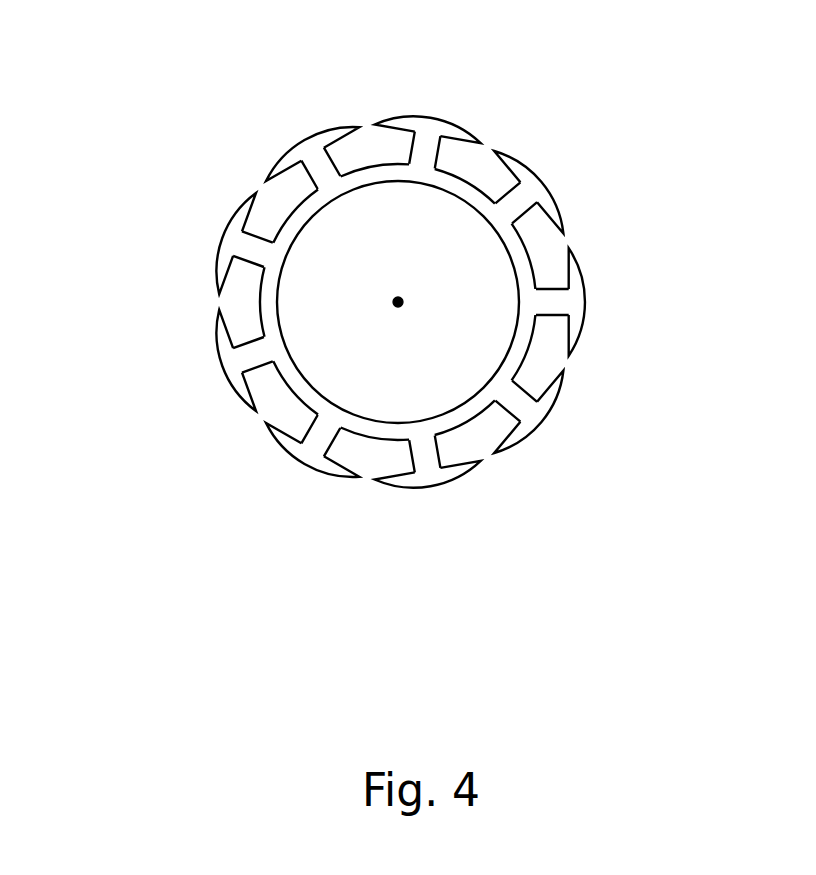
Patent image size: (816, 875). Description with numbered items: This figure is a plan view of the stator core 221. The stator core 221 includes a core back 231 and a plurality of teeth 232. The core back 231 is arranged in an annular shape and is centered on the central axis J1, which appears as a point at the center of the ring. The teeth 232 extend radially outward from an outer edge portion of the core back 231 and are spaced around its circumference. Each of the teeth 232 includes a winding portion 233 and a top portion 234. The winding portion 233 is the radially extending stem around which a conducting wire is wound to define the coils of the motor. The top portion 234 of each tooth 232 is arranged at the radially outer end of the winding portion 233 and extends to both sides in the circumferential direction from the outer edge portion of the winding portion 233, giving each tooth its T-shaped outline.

The stator core 221 is at (387, 302).
The core back 231 is at (527, 270).
The teeth 232 is at (387, 319).
The winding portion 233 is at (263, 240).
The top portion 234 is at (223, 250).
The central axis J1 is at (408, 298).